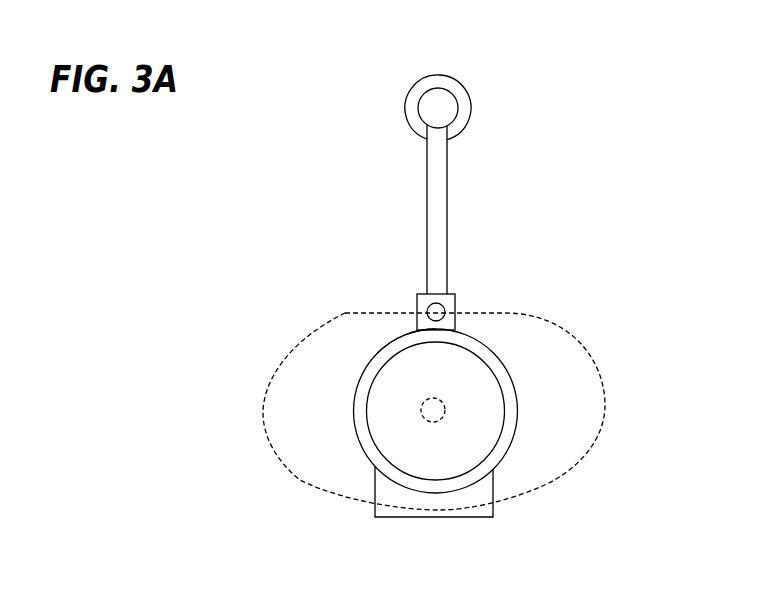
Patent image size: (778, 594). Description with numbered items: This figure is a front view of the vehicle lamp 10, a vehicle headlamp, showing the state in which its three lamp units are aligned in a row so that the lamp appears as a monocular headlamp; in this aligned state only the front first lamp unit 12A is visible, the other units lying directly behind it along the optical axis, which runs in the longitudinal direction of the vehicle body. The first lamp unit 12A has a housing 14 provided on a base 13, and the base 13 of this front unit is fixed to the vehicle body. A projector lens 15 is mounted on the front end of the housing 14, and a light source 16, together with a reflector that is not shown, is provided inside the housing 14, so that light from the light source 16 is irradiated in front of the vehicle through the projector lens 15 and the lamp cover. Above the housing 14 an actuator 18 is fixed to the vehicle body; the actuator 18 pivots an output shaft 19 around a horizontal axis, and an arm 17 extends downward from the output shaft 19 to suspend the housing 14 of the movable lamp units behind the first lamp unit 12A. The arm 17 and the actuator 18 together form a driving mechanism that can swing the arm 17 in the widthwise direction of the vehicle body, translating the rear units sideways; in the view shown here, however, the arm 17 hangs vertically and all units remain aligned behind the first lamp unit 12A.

The vehicle lamp 10 is at (295, 333).
The first lamp unit 12A is at (395, 337).
The base 13 is at (438, 503).
The housing 14 is at (362, 407).
The projector lens 15 is at (503, 407).
The light source 16 is at (437, 423).
The arm 17 is at (437, 218).
The actuator 18 is at (408, 119).
The output shaft 19 is at (445, 107).